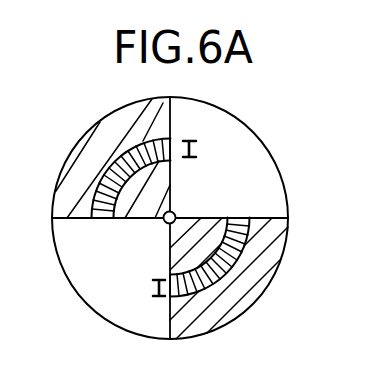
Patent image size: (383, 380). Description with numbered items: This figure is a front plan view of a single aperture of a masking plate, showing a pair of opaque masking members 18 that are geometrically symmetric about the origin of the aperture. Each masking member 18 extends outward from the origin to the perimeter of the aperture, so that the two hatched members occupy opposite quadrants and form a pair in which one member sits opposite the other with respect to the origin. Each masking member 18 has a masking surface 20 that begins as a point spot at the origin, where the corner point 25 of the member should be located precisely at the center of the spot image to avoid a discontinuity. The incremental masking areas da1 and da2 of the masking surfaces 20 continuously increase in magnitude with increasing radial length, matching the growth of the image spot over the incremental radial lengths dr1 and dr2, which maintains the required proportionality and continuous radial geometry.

The masking member 18 is at (119, 116).
The masking surface 20 is at (210, 219).
The corner point 25 is at (114, 240).
The incremental masking area da1 is at (106, 170).
The incremental masking area da2 is at (232, 272).
The incremental radial length dr1 is at (198, 153).
The incremental radial length dr2 is at (152, 288).